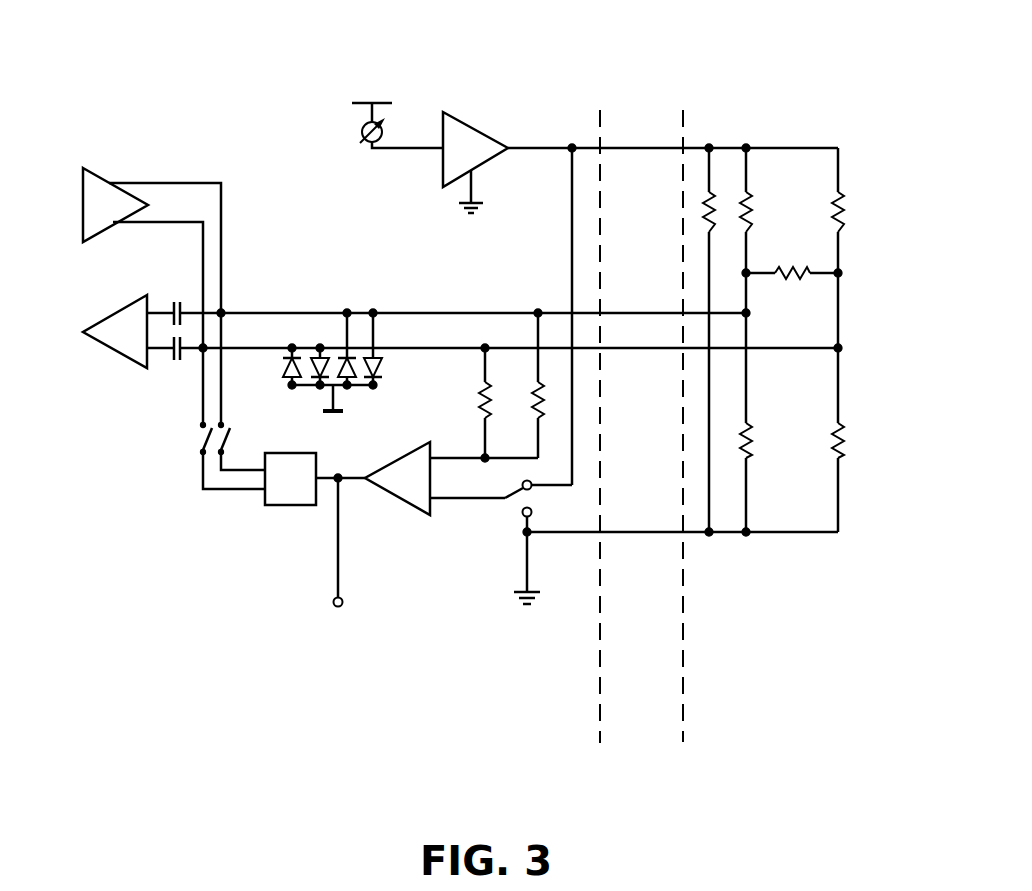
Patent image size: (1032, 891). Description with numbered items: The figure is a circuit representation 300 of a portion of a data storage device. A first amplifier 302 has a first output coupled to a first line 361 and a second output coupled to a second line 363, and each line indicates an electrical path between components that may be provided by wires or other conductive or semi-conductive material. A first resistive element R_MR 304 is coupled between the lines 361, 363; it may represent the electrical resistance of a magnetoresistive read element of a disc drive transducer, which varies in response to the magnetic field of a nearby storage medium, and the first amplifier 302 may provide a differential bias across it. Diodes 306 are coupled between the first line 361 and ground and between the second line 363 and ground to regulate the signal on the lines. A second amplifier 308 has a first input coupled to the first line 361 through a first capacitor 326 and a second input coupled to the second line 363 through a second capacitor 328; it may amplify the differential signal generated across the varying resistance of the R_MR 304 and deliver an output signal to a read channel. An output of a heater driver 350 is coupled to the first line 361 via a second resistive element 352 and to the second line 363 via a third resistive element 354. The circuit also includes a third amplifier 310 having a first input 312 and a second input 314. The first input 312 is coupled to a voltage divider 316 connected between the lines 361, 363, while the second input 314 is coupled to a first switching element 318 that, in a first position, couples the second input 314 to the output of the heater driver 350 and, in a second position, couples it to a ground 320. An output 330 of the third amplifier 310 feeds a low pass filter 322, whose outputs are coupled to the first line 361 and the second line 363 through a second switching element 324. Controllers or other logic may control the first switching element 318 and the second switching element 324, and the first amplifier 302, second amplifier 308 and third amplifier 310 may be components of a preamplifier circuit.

The circuit representation 300 is at (96, 103).
The first amplifier 302 is at (97, 185).
The first resistive element R_MR 304 is at (795, 280).
The diodes 306 is at (262, 371).
The second amplifier 308 is at (135, 318).
The third amplifier 310 is at (415, 472).
The first input 312 is at (450, 455).
The second input 314 is at (450, 500).
The voltage divider 316 is at (528, 395).
The first switching element 318 is at (503, 519).
The ground 320 is at (527, 610).
The low pass filter (LPF) 322 is at (283, 495).
The second switching element 324 is at (190, 440).
The first capacitor 326 is at (178, 300).
The second capacitor 328 is at (178, 362).
The output 330 is at (337, 608).
The heater driver 350 is at (477, 148).
The second resistive element 352 is at (747, 185).
The third resistive element 354 is at (838, 190).
The first line 361 is at (248, 348).
The second line 363 is at (265, 312).